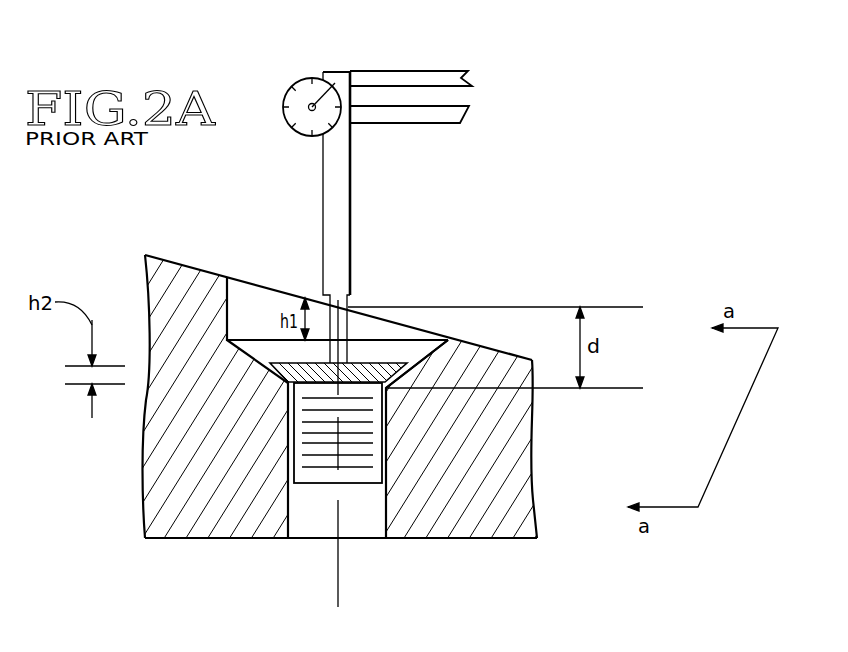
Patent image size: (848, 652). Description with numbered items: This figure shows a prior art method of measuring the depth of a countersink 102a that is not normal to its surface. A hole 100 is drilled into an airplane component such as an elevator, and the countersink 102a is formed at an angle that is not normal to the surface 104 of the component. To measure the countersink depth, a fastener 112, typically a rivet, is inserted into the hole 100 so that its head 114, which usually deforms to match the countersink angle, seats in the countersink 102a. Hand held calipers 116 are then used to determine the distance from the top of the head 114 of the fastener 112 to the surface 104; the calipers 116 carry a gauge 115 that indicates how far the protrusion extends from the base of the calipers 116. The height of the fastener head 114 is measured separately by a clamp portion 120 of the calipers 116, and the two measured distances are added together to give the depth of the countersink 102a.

The hole 100 is at (312, 516).
The countersink 102a is at (413, 346).
The surface 104 is at (196, 262).
The fastener 112 is at (398, 437).
The head 114 is at (370, 355).
The gauge 115 is at (289, 70).
The hand held calipers 116 is at (358, 190).
The clamp portion 120 is at (474, 56).